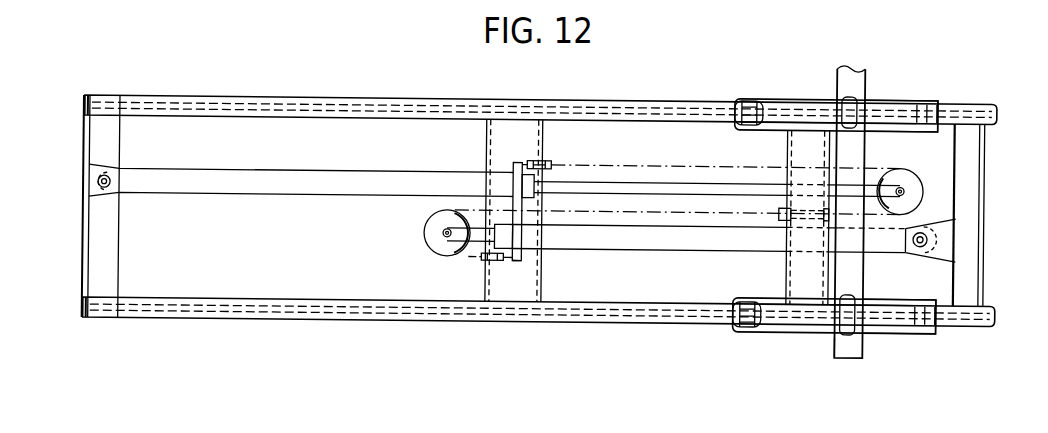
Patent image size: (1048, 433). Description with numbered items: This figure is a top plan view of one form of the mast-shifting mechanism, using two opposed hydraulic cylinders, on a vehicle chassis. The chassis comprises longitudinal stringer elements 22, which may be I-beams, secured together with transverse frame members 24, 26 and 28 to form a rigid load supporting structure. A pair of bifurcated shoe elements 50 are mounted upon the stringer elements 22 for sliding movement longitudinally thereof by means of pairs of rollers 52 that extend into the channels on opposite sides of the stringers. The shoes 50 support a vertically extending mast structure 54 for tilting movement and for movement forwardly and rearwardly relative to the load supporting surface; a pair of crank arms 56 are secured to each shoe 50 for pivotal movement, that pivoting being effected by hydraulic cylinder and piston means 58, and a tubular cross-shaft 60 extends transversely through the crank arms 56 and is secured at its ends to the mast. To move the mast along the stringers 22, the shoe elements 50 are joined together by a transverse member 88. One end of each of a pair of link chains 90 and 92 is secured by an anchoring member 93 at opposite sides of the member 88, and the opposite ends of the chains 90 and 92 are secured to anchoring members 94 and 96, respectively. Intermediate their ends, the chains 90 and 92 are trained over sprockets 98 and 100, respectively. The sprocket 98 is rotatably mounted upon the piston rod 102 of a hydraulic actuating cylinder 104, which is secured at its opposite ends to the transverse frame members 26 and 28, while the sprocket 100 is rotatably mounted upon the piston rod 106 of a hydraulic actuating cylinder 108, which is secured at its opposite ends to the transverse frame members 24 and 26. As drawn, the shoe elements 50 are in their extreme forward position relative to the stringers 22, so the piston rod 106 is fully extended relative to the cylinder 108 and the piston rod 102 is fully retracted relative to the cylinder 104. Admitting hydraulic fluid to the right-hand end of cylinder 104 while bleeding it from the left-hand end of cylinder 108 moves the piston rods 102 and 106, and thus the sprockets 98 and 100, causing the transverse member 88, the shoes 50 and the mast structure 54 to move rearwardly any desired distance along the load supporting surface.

The longitudinal stringer elements 22 is at (276, 95).
The transverse frame member 24 is at (83, 245).
The transverse frame member 26 is at (982, 273).
The transverse frame member 28 is at (532, 278).
The bifurcated shoe elements 50 is at (760, 93).
The rollers 52 is at (938, 97).
The mast structure 54 is at (867, 356).
The crank arms 56 is at (800, 111).
The hydraulic cylinder and piston means 58 is at (735, 101).
The tubular cross-shaft 60 is at (841, 340).
The transverse member 88 is at (792, 263).
The link chain 90 is at (683, 211).
The link chain 92 is at (669, 158).
The anchoring member 93 is at (781, 210).
The anchoring member 94 is at (518, 256).
The anchoring member 96 is at (518, 158).
The sprocket 98 is at (430, 225).
The sprocket 100 is at (904, 167).
The piston rod 102 is at (446, 232).
The hydraulic actuating cylinder 104 is at (617, 240).
The piston rod 106 is at (915, 198).
The hydraulic actuating cylinder 108 is at (319, 168).